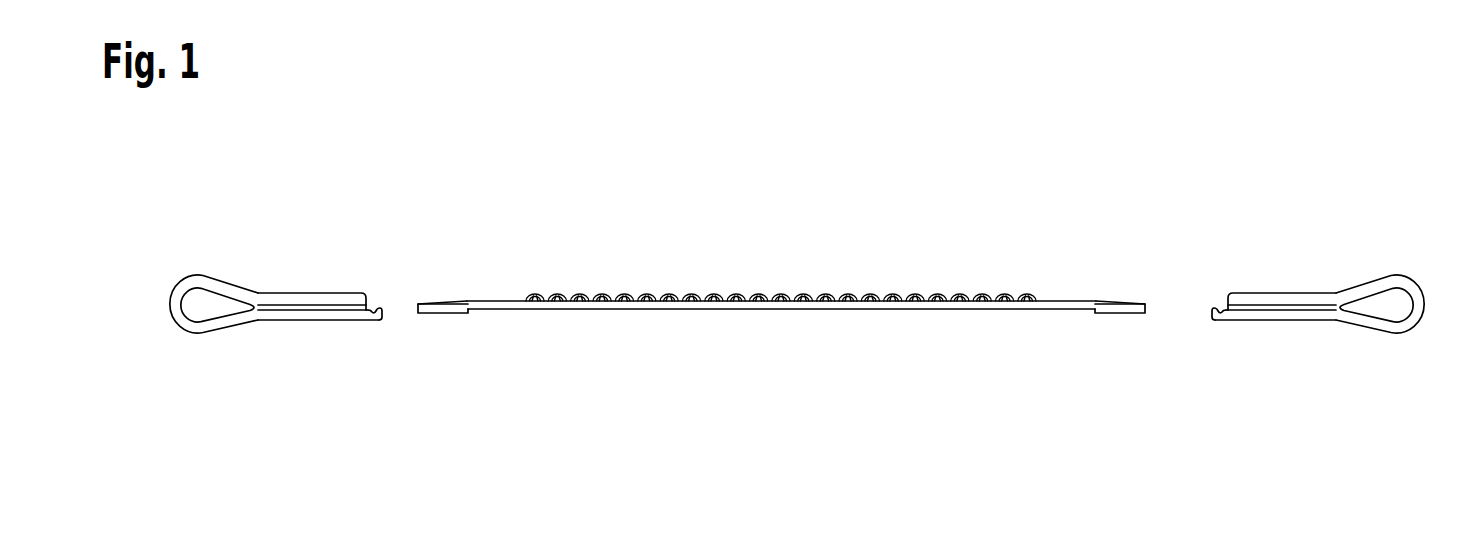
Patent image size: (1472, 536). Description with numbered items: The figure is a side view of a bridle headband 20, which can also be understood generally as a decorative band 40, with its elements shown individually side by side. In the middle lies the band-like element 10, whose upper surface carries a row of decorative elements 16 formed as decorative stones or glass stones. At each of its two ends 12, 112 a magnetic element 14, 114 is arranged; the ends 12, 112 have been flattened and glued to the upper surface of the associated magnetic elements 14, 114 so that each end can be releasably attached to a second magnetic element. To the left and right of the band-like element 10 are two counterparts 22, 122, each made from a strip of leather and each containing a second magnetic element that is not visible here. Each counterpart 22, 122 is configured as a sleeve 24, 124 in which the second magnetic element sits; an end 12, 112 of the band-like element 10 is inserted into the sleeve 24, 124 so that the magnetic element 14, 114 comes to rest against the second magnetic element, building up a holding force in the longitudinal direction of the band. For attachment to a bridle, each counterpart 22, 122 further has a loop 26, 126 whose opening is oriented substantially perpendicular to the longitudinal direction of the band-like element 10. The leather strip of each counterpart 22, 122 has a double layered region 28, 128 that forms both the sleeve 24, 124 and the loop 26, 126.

The band-like element 10 is at (781, 279).
The end 12 is at (1094, 309).
The magnetic element 14 is at (1122, 312).
The decorative elements 16 is at (637, 295).
The bridle headband 20 is at (1307, 264).
The decorative band 40 is at (1307, 264).
The counterpart 22 is at (1287, 295).
The sleeve 24 is at (1213, 290).
The loop 26 is at (1374, 357).
The double layered region 28 is at (1247, 314).
The end 112 is at (473, 309).
The magnetic element 114 is at (448, 313).
The counterpart 122 is at (299, 295).
The sleeve 124 is at (385, 290).
The loop 126 is at (190, 357).
The double layered region 128 is at (317, 314).